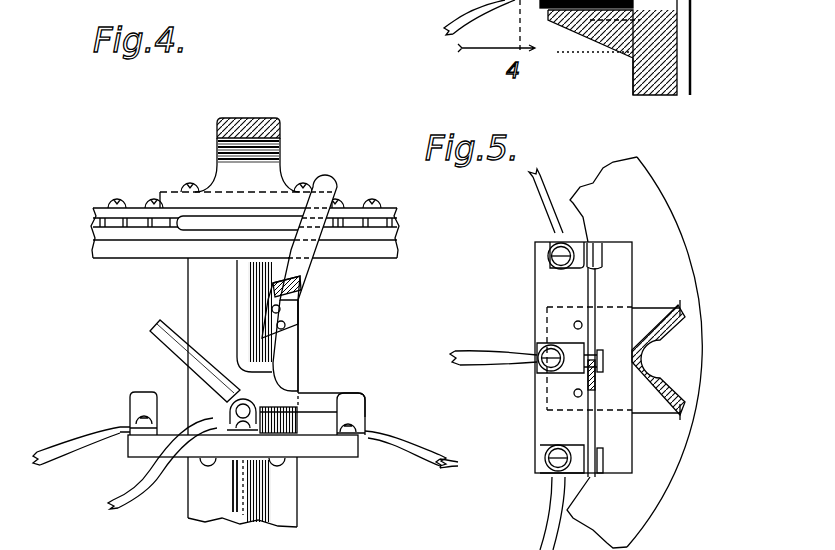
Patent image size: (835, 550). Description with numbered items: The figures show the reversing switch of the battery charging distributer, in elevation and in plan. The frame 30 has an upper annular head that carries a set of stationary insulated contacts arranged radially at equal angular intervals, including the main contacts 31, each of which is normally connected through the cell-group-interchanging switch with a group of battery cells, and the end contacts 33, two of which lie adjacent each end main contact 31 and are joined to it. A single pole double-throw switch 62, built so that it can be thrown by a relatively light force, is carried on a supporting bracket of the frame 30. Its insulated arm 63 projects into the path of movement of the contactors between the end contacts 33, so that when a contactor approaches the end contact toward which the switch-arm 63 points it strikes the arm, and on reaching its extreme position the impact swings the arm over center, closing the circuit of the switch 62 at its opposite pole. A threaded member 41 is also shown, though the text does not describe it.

In FIG. 4, the frame 30 is at (200, 388).
In FIG. 5, the frame 30 is at (667, 358).
In FIG. 4, the main contacts 31 is at (117, 222).
In FIG. 4, the end contacts 33 is at (163, 222).
In FIG. 4, the threaded shaft 41 is at (250, 127).
In FIG. 4, the single pole double-throw switch 62 is at (310, 403).
In FIG. 5, the single pole double-throw switch 62 is at (588, 428).
In FIG. 4, the insulated arm 63 is at (318, 266).